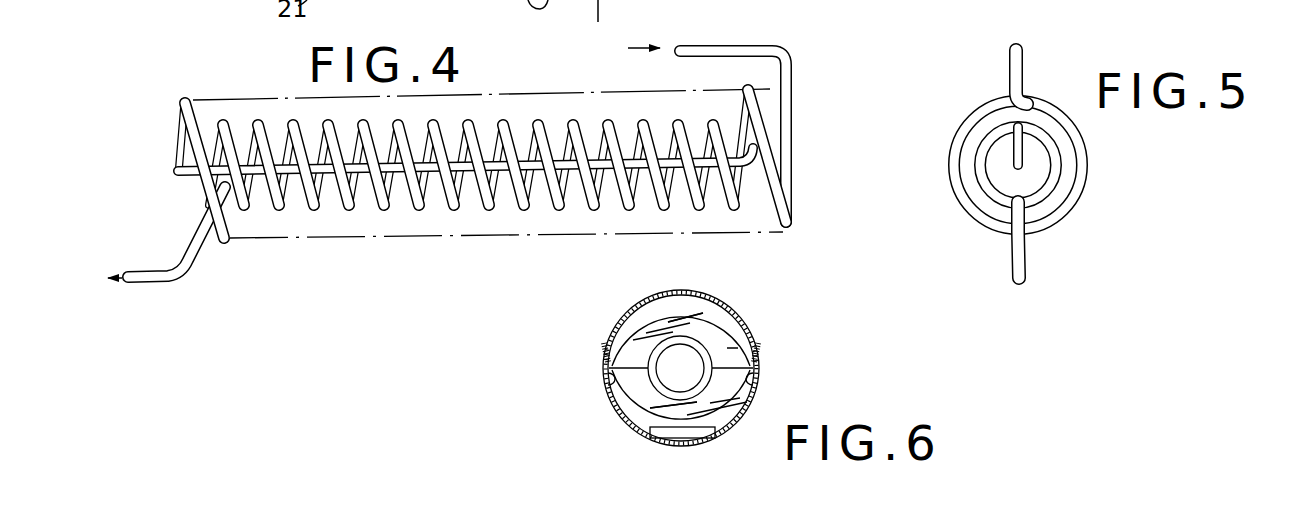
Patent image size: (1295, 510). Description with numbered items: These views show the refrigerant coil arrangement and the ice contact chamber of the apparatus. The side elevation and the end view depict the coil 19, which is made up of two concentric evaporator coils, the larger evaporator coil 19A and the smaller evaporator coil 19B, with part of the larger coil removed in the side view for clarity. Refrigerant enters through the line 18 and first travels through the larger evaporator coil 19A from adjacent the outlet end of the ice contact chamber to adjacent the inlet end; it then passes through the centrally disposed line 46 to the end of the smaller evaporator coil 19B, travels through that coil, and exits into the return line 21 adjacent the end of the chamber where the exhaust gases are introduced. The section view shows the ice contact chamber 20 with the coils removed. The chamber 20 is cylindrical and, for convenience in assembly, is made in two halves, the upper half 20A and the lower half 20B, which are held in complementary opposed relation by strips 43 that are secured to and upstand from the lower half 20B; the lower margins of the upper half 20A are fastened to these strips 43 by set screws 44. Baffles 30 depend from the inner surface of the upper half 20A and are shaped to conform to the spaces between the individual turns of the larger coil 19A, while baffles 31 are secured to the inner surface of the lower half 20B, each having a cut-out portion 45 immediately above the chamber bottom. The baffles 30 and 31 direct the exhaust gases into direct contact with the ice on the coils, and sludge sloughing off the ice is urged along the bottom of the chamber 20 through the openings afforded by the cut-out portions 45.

In FIG. 4, the line 18 is at (716, 40).
In FIG. 5, the line 18 is at (1025, 62).
In FIG. 4, the coil 19 is at (377, 251).
In FIG. 5, the coil 19 is at (958, 233).
In FIG. 4, the larger evaporator coil 19A is at (747, 92).
In FIG. 5, the larger evaporator coil 19A is at (1088, 168).
In FIG. 4, the smaller evaporator coil 19B is at (632, 203).
In FIG. 5, the smaller evaporator coil 19B is at (1053, 193).
In FIG. 4, the return line 21 is at (146, 287).
In FIG. 5, the return line 21 is at (1026, 272).
In FIG. 4, the centrally disposed line 46 is at (470, 205).
In FIG. 5, the centrally disposed line 46 is at (1013, 168).
In FIG. 6, the ice contact chamber 20 is at (590, 401).
In FIG. 6, the upper half 20A is at (730, 305).
In FIG. 6, the lower half 20B is at (722, 437).
In FIG. 6, the baffles 30 is at (706, 318).
In FIG. 6, the baffles 31 is at (630, 410).
In FIG. 6, the strips 43 is at (607, 380).
In FIG. 6, the set screws 44 is at (601, 352).
In FIG. 6, the cut-out portion 45 is at (676, 431).